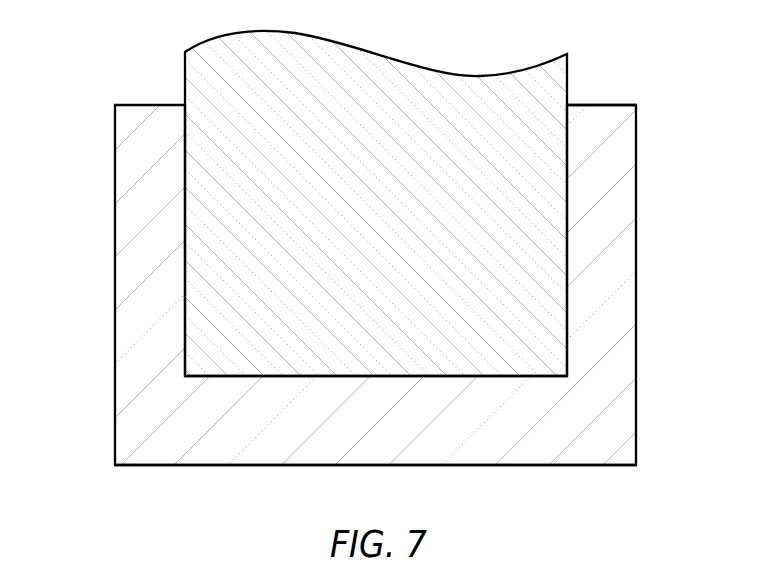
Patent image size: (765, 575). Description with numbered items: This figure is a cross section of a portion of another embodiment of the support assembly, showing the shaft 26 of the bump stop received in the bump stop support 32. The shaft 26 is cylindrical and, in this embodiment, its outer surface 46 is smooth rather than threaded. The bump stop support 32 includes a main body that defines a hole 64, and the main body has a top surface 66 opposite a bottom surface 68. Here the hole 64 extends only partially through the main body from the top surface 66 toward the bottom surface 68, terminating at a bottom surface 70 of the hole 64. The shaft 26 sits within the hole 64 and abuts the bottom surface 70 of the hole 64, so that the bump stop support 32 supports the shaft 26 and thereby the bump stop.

The shaft 26 is at (380, 98).
The bump stop support 32 is at (137, 157).
The outer surface 46 is at (184, 120).
The hole 64 is at (567, 190).
The top surface 66 is at (608, 105).
The bottom surface 68 is at (607, 466).
The bottom surface 70 is at (502, 377).